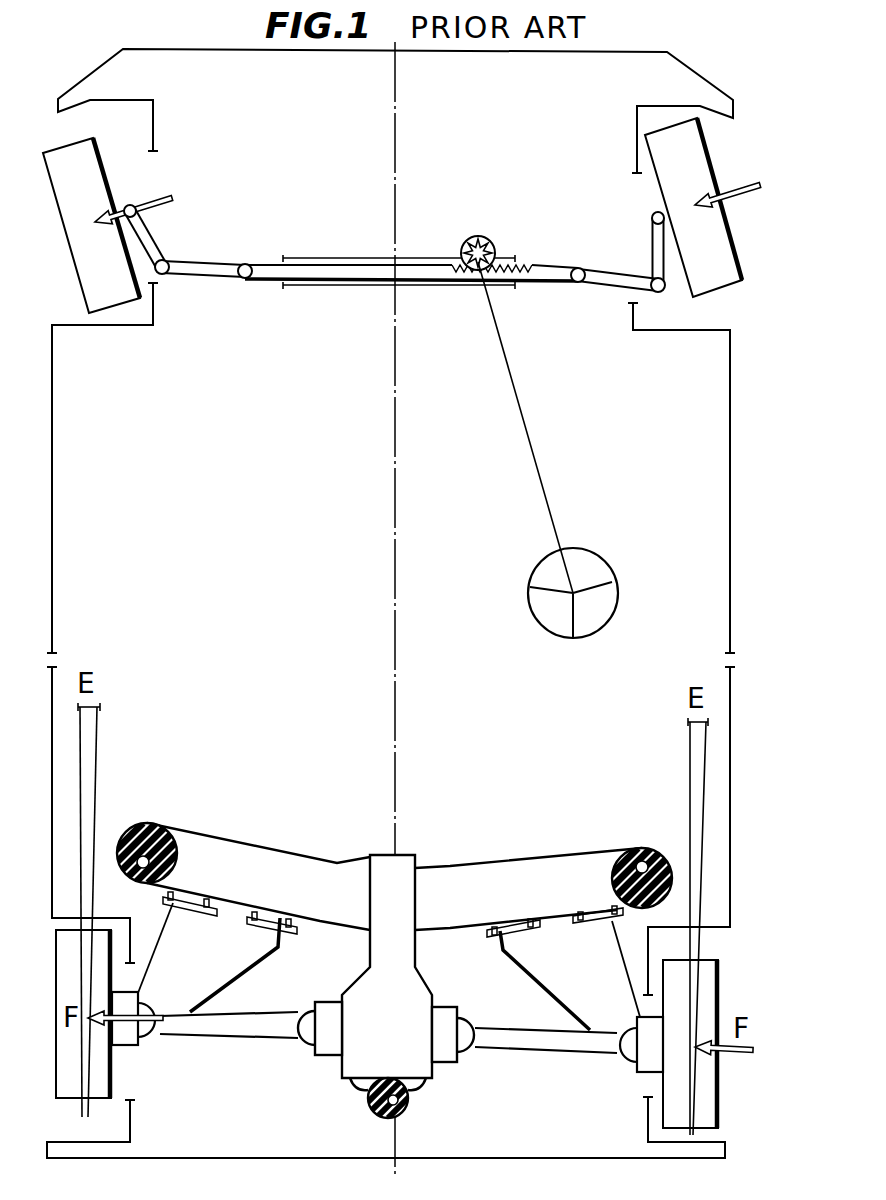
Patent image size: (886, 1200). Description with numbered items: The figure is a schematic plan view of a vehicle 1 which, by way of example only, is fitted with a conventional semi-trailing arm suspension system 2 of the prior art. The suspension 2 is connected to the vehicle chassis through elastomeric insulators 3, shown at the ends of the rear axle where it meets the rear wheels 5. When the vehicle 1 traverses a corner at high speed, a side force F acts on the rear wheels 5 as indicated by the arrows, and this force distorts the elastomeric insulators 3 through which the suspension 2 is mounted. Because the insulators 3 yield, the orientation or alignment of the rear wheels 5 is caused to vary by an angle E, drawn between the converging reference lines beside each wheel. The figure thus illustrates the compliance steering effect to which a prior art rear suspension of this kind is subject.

The vehicle 1 is at (56, 442).
The semi-trailing arm suspension system 2 is at (214, 826).
The elastomeric insulators 3 is at (140, 834).
The rear wheels 5 is at (98, 1072).